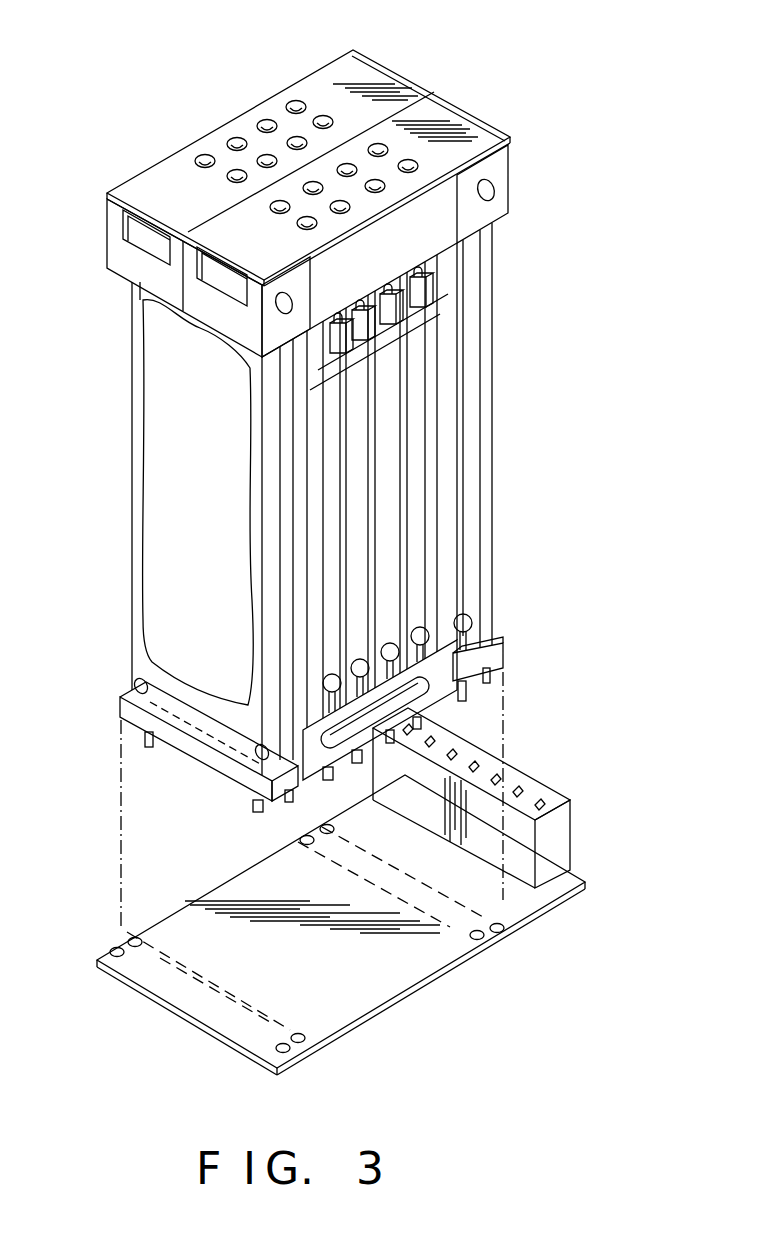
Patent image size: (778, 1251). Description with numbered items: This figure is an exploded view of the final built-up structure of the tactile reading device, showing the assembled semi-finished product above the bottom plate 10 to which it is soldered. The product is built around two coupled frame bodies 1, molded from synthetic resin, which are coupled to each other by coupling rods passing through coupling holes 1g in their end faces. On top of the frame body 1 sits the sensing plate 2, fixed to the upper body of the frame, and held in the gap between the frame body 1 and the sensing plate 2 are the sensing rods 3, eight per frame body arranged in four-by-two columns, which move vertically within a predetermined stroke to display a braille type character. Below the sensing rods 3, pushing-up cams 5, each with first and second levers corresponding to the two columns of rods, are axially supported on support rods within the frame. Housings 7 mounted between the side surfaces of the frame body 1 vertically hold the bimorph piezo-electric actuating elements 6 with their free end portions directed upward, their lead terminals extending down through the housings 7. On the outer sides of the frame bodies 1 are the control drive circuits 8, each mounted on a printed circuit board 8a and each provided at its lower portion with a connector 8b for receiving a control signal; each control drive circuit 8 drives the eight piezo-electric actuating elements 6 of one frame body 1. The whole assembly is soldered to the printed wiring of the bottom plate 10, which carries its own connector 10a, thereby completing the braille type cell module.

The frame body 1 is at (542, 160).
The coupling hole 1g is at (488, 192).
The sensing plate 2 is at (378, 82).
The sensing rod 3 is at (233, 141).
The pushing-up cam 5 is at (392, 313).
The piezo-electric actuating element 6 is at (422, 490).
The housing 7 is at (443, 702).
The control drive circuit 8 is at (150, 560).
The printed circuit board 8a is at (283, 444).
The connector 8b is at (503, 653).
The bottom plate 10 is at (180, 1017).
The connector 10a is at (573, 845).